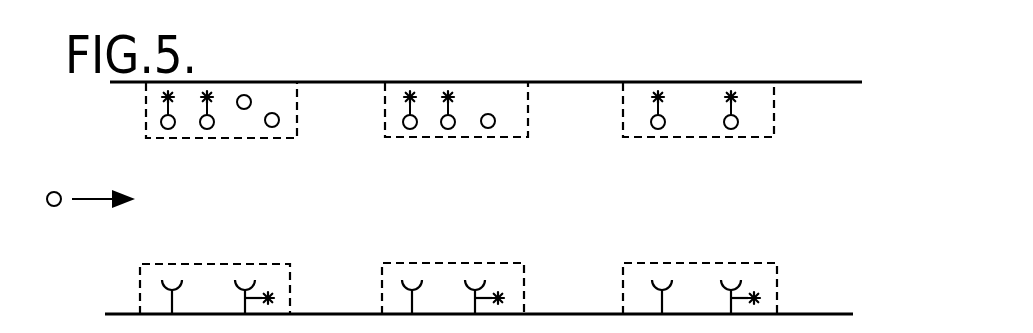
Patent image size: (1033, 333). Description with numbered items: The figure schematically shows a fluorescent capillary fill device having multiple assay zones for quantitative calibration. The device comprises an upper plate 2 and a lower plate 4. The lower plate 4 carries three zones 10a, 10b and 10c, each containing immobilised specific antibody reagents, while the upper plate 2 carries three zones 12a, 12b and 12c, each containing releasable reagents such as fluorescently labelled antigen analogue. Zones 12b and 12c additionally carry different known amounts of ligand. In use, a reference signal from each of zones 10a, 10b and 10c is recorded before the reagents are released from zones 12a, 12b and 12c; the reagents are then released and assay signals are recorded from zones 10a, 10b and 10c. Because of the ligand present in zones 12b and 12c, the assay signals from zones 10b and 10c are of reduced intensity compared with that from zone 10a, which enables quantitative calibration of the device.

The upper plate 2 is at (822, 82).
The lower plate 4 is at (823, 313).
The zone 10a is at (778, 283).
The zone 10b is at (525, 281).
The zone 10c is at (291, 282).
The zone 12a is at (775, 100).
The zone 12b is at (529, 104).
The zone 12c is at (298, 116).